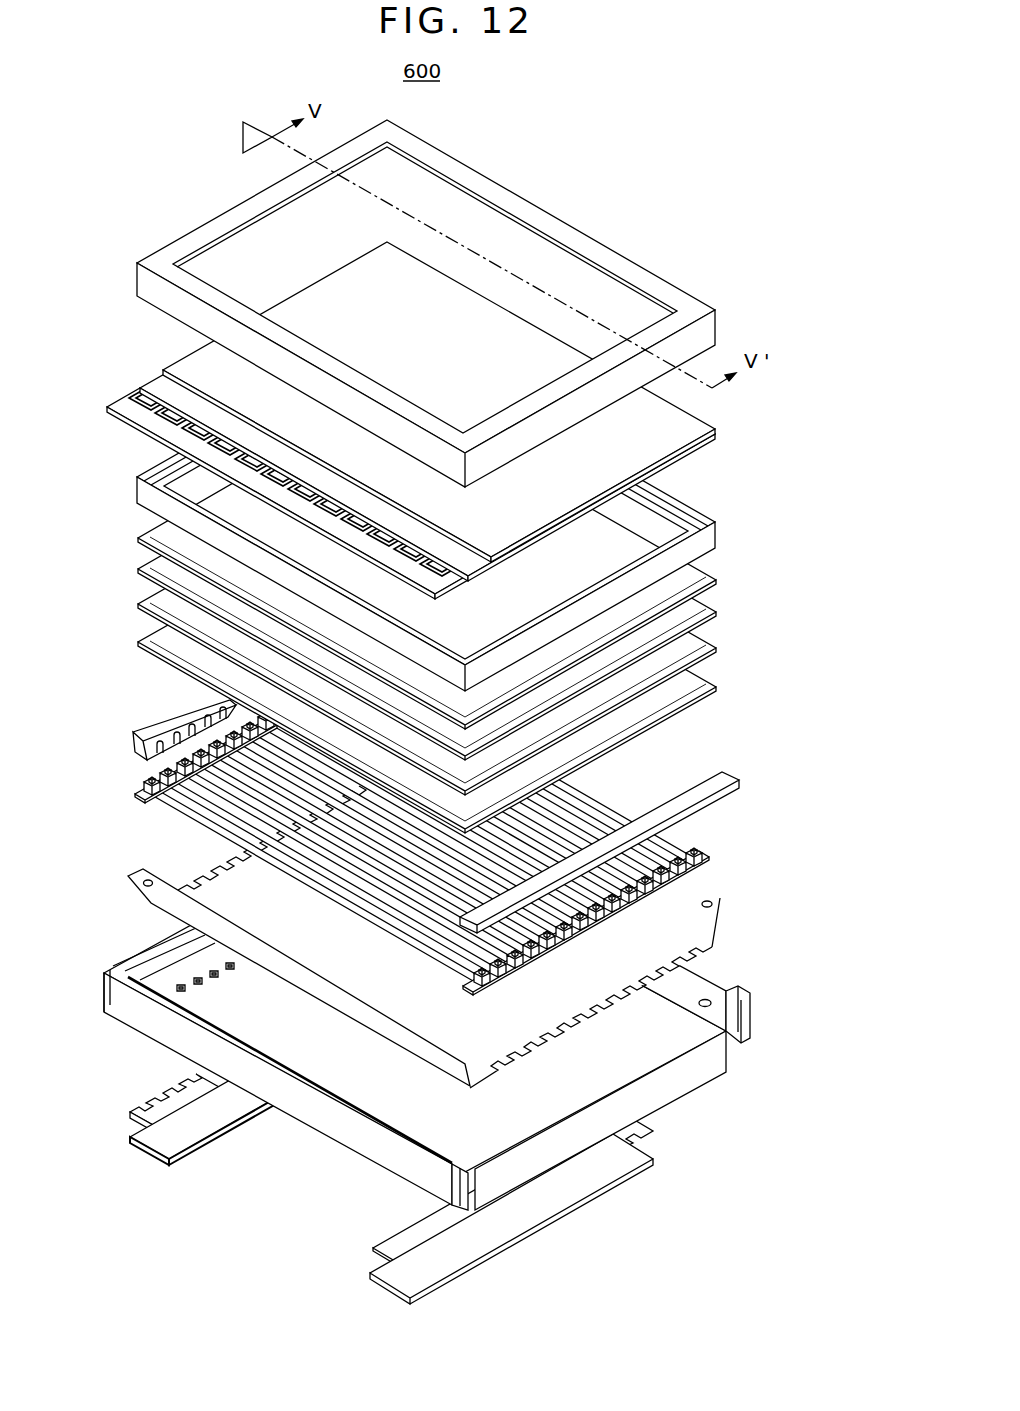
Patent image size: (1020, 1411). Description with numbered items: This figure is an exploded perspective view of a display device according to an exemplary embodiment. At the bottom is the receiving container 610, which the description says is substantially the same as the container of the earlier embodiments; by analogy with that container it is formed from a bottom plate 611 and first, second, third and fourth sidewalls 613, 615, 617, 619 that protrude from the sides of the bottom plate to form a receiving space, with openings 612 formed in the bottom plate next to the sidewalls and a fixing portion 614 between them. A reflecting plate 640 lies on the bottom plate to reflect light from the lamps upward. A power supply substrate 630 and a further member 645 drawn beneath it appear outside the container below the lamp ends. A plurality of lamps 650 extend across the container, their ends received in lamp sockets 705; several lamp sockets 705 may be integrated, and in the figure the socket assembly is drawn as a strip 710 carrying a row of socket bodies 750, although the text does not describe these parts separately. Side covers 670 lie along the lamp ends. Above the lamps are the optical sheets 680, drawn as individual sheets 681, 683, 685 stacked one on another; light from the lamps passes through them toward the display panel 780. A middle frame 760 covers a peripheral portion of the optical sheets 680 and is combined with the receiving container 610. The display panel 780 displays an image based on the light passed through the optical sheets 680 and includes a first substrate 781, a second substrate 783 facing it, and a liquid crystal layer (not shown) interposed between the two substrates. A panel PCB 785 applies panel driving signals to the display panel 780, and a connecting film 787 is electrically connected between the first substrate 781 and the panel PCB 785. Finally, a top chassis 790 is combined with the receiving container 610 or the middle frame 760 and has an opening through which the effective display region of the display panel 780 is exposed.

The receiving container 610 is at (422, 1001).
The bottom plate 611 is at (620, 1068).
The first side wall 612 is at (125, 962).
The mounting portion 613 is at (140, 965).
The second side wall 614 is at (120, 1015).
The third side wall 615 is at (724, 1062).
The fourth side wall 617 is at (345, 1142).
The flange 619 is at (750, 1022).
The power supply substrate 630 is at (140, 1100).
The reflecting plate 640 is at (705, 930).
The supporting plate 645 is at (140, 1125).
The lamps 650 is at (620, 806).
The side covers 670 is at (724, 786).
The optical sheets 680 is at (493, 613).
The diffusion sheet 681 is at (718, 687).
The prism sheet 683 is at (718, 648).
The protection sheets 685 is at (793, 704).
The lamp socket 705 is at (490, 853).
The socket printed circuit board 710 is at (700, 889).
The lamp sockets 750 is at (698, 858).
The middle frame 760 is at (712, 502).
The display panel 780 is at (382, 420).
The first substrate 781 is at (158, 386).
The second substrate 783 is at (193, 366).
The panel PCB 785 is at (140, 422).
The connecting film 787 is at (140, 398).
The top chassis 790 is at (712, 284).